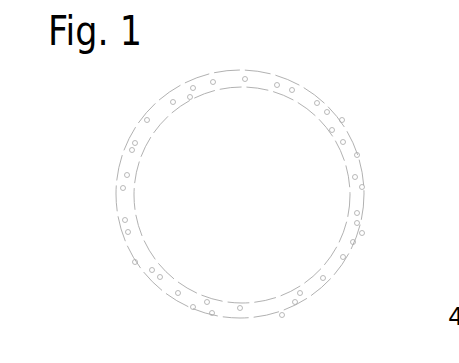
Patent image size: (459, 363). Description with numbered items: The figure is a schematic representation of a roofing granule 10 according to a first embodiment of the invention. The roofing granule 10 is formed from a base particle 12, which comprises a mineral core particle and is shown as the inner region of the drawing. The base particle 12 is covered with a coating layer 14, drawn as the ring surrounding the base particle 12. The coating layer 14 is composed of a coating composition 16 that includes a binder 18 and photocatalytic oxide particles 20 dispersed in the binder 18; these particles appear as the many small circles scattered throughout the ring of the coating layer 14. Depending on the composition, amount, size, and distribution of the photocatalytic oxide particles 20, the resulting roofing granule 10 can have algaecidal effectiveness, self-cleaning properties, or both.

The roofing granule 10 is at (210, 193).
The base particle 12 is at (218, 276).
The coating layer 14 is at (270, 72).
The coating composition 16 is at (335, 118).
The binder 18 is at (147, 133).
The photocatalytic oxide particles 20 is at (357, 155).